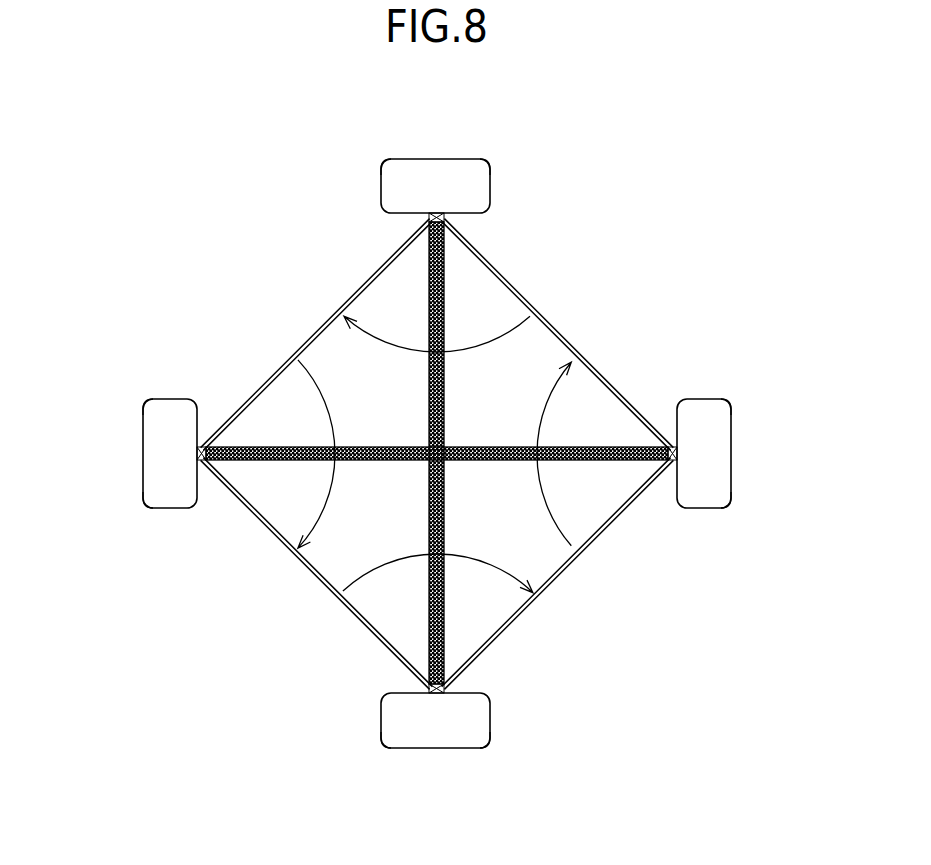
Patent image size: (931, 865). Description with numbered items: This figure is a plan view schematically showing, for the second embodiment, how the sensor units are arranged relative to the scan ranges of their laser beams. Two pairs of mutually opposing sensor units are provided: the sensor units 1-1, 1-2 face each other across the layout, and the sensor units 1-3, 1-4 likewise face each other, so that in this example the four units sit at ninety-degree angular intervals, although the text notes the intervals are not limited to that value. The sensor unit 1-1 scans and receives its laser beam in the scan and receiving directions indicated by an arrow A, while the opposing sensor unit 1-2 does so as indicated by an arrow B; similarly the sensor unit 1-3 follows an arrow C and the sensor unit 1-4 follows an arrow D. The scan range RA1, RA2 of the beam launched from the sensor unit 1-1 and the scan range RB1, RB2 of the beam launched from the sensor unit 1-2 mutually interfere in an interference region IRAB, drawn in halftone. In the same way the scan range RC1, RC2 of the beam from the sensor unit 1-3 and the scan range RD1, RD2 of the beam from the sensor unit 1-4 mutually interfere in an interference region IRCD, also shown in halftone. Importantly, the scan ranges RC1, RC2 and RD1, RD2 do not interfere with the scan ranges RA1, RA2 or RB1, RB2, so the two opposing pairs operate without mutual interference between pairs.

The sensor unit 1-1 is at (157, 455).
The sensor unit 1-2 is at (715, 455).
The sensor unit 1-3 is at (436, 172).
The sensor unit 1-4 is at (436, 722).
The scan range end RA1 is at (490, 170).
The scan range end RA2 is at (490, 740).
The scan range end RB1 is at (381, 740).
The scan range end RB2 is at (381, 170).
The scan range end RC1 is at (725, 508).
The scan range end RC2 is at (148, 508).
The scan range end RD1 is at (148, 400).
The scan range end RD2 is at (725, 400).
The interference region IRAB is at (487, 443).
The interference region IRCD is at (430, 290).
The arrow A is at (316, 385).
The arrow B is at (558, 521).
The arrow C is at (478, 345).
The arrow D is at (365, 592).